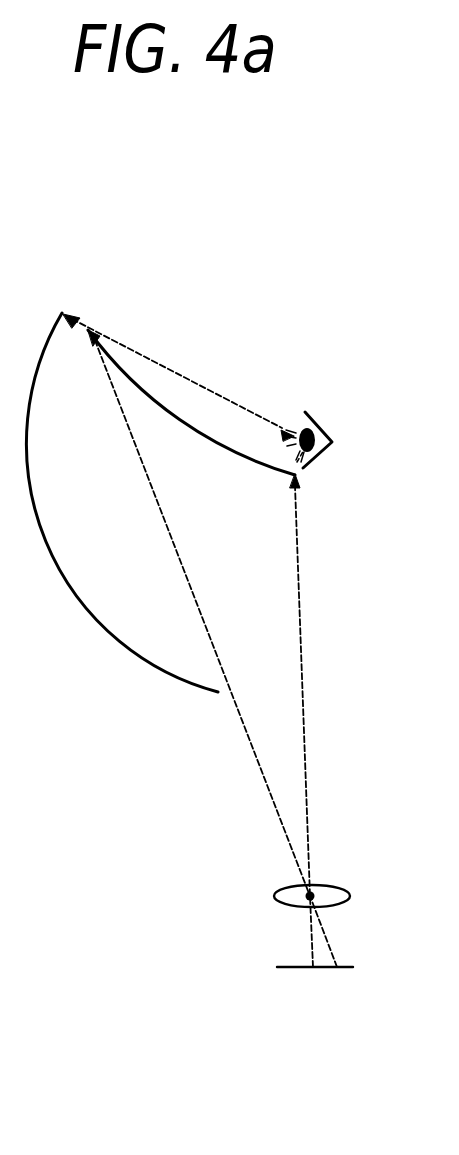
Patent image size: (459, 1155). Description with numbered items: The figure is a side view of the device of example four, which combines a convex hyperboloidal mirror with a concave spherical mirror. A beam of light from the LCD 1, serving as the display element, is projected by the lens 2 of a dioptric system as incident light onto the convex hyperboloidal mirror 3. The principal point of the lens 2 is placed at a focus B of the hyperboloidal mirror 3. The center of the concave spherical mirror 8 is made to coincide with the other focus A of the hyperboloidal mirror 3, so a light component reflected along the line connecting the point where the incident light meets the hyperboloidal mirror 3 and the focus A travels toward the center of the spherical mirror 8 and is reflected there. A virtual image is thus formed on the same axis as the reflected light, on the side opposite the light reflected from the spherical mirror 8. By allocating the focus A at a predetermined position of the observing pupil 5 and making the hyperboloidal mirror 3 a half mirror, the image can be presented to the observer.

The LCD 1 is at (292, 965).
The lens 2 is at (350, 890).
The convex hyperboloidal mirror 3 is at (213, 442).
The observing pupil 5 is at (305, 432).
The concave spherical mirror 8 is at (53, 552).
The focus A of the hyperboloidal mirror A is at (290, 441).
The focus B of the hyperboloidal mirror B is at (315, 890).